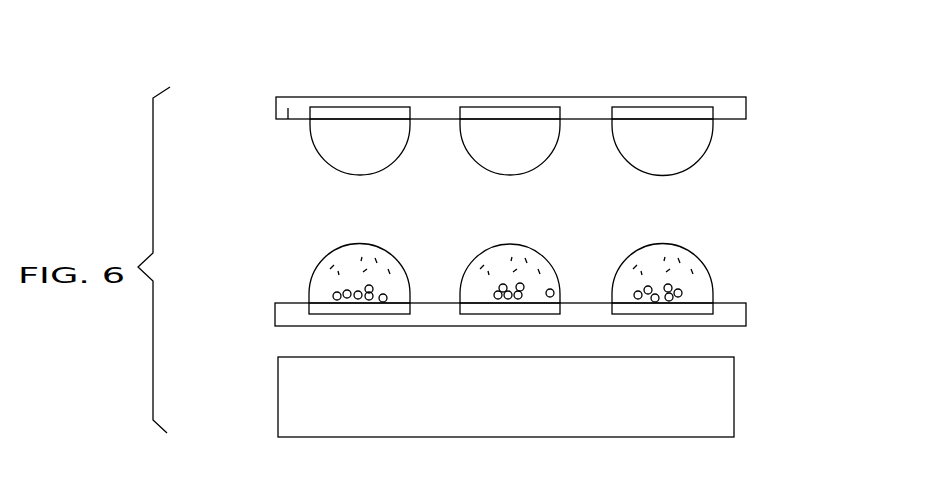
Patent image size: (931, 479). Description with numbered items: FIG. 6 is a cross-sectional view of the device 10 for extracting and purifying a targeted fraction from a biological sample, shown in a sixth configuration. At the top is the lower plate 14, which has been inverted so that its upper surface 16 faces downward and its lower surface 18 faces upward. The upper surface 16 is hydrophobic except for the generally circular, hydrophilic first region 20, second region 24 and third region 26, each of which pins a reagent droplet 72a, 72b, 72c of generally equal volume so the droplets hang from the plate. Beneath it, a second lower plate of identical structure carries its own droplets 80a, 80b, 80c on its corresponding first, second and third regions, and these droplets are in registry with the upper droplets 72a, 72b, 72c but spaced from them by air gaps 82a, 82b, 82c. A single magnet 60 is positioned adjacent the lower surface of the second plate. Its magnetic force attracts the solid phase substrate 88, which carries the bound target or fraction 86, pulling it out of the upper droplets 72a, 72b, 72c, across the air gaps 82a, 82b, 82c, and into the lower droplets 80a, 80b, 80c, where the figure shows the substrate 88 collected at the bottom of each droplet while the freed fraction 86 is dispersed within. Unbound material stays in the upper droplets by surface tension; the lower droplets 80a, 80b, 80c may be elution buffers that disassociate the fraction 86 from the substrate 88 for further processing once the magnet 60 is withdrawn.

The device 10 is at (213, 123).
The lower plate 14 is at (283, 95).
The upper surface 16 is at (287, 120).
The lower surface 18 is at (431, 97).
The first region 20 is at (331, 107).
The second region 24 is at (481, 107).
The third region 26 is at (617, 107).
The droplet 72a is at (385, 167).
The droplet 72b is at (536, 167).
The droplet 72c is at (688, 167).
The air gap 82a is at (377, 224).
The air gap 82b is at (528, 224).
The air gap 82c is at (680, 225).
The droplet 80a is at (329, 256).
The droplet 80b is at (480, 256).
The droplet 80c is at (634, 256).
The target or fraction 86 is at (324, 272).
The solid phase substrate 88 is at (336, 300).
The magnet 60 is at (735, 398).